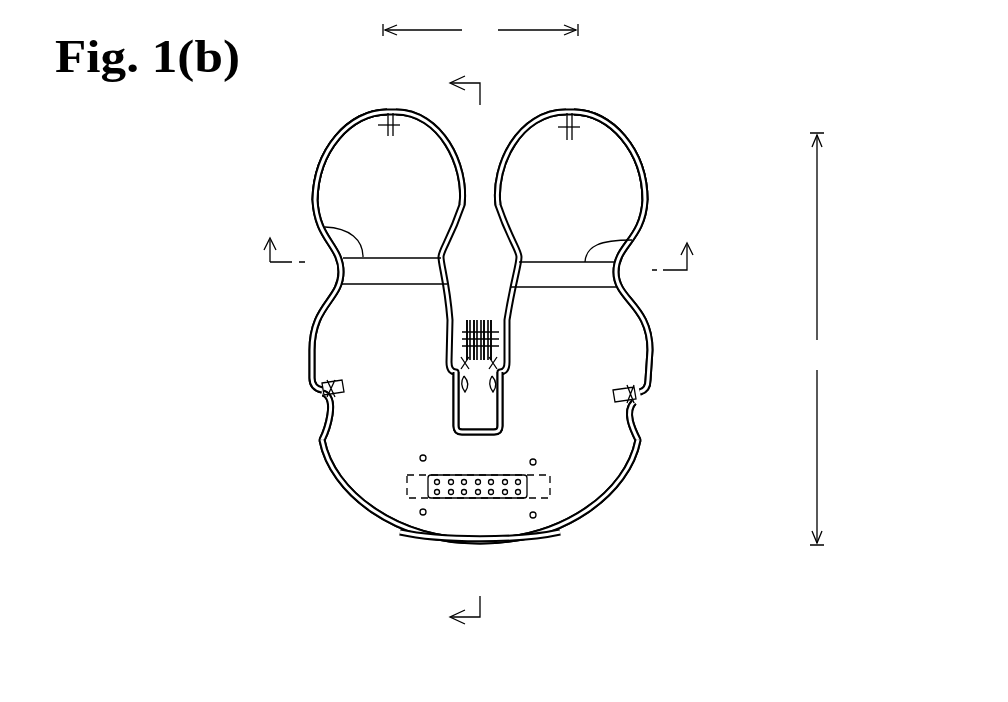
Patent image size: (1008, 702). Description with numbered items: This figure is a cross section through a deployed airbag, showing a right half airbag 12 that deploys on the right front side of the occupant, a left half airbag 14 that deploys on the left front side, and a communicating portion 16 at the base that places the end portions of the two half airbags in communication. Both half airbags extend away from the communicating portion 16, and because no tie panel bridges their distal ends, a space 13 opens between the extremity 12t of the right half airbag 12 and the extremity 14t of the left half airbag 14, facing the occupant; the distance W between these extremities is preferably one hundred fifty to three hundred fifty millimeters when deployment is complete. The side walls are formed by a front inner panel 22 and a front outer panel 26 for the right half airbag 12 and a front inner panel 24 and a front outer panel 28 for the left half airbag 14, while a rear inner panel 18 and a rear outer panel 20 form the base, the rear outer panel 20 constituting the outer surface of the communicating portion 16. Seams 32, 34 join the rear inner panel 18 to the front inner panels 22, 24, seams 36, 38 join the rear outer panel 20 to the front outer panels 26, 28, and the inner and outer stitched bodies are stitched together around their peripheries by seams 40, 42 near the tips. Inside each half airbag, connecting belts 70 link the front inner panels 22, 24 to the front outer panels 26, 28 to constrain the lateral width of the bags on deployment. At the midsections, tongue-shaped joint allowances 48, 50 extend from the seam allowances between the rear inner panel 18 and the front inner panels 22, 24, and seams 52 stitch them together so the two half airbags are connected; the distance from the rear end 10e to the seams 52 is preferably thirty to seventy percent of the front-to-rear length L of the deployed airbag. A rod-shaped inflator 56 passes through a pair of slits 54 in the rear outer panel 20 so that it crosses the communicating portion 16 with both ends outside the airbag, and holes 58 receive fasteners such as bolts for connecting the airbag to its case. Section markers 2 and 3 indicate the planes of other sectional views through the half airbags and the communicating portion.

The rear end 10e is at (478, 549).
The right half airbag 12 is at (303, 117).
The extremity of the right half airbag 12t is at (390, 106).
The space 13 is at (497, 143).
The left half airbag 14 is at (652, 121).
The extremity of the left half airbag 14t is at (570, 106).
The communicating portion 16 is at (562, 492).
The rear inner panel 18 is at (470, 436).
The rear outer panel 20 is at (352, 512).
The front inner panel 22 is at (437, 140).
The front inner panel 24 is at (505, 158).
The front outer panel 26 is at (318, 178).
The front outer panel 28 is at (647, 190).
The seam 32 is at (458, 392).
The seam 34 is at (502, 388).
The seam 36 is at (316, 422).
The seam 38 is at (650, 378).
The seam 40 is at (382, 127).
The seam 42 is at (580, 128).
The joint allowance 48 is at (471, 316).
The joint allowance 50 is at (511, 328).
The seams 52 is at (462, 340).
The slits 54 is at (410, 478).
The inflator 56 is at (486, 502).
The holes 58 is at (420, 456).
The connecting belts 70 is at (320, 226).
The section line 2 is at (483, 256).
The section line 3 is at (481, 345).
The distance between extremities W is at (480, 30).
The length of the deployed airbag L is at (817, 339).